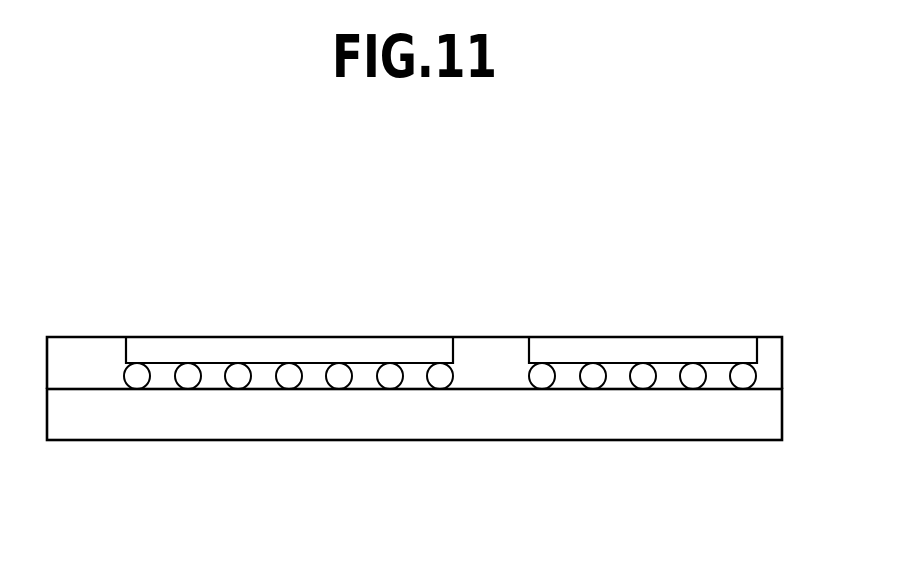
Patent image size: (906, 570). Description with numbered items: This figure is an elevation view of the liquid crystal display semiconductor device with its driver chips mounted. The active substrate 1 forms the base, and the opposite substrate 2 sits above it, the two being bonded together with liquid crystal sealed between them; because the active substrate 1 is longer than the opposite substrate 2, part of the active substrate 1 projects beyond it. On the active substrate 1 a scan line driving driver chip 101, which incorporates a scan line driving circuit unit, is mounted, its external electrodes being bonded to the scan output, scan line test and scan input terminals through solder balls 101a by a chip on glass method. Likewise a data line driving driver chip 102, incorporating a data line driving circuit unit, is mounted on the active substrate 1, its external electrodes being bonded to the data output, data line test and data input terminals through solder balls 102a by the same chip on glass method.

The active substrate 1 is at (235, 417).
The opposite substrate 2 is at (96, 363).
The scan line driving driver chip 101 is at (613, 353).
The solder balls 101a is at (542, 380).
The data line driving driver chip 102 is at (248, 349).
The solder balls 102a is at (137, 378).